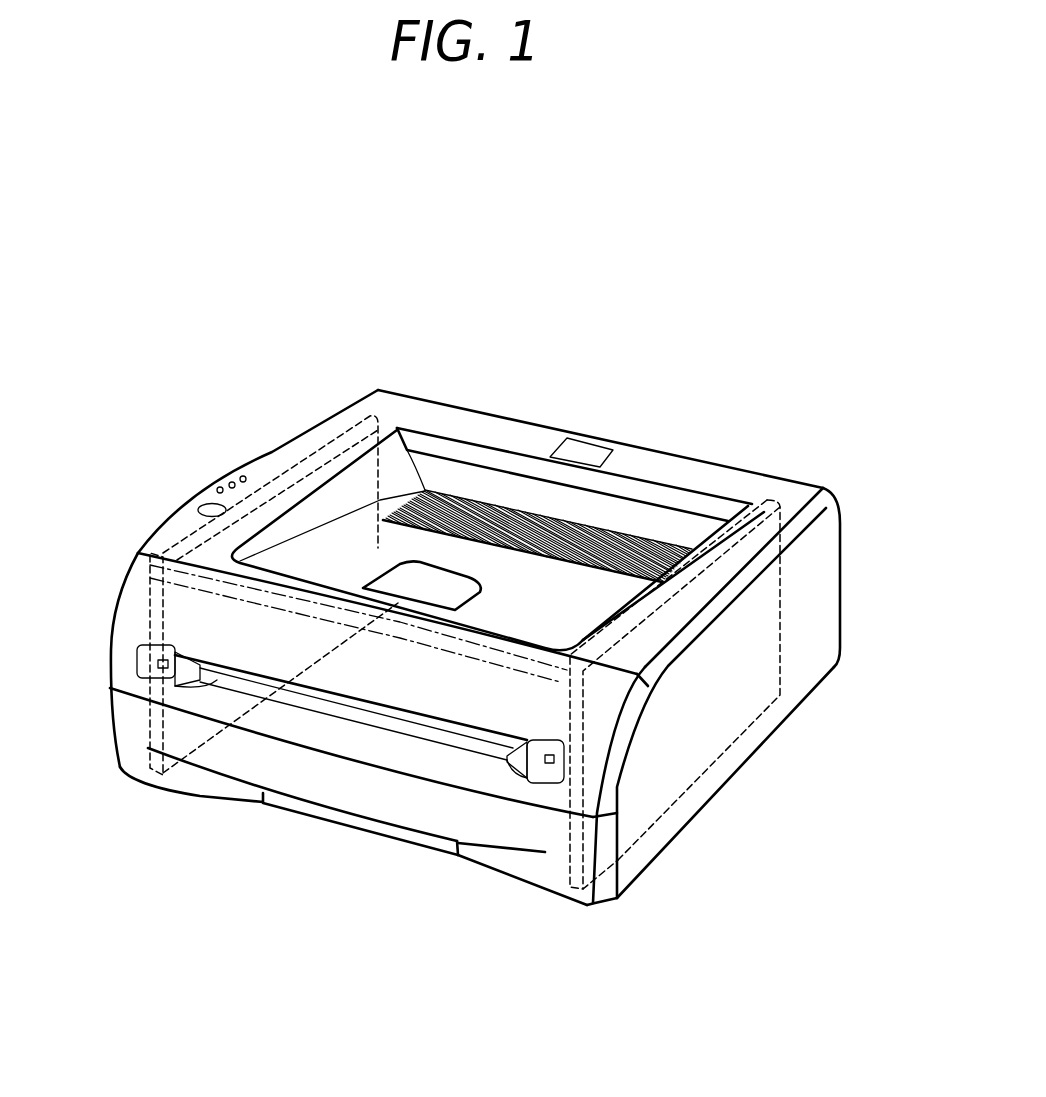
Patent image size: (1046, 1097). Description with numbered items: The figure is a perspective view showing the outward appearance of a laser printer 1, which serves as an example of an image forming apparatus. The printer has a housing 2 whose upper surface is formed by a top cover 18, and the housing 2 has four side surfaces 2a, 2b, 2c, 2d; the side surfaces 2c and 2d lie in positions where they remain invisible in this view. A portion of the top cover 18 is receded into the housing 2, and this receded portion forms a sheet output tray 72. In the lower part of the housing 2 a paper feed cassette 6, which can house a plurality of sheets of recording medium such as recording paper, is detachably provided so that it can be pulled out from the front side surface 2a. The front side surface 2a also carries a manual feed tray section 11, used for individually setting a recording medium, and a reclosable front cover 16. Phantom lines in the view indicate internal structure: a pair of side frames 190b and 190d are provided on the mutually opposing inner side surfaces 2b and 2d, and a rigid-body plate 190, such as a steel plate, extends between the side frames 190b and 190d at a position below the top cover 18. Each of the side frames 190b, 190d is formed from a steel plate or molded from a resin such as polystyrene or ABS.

The laser printer 1 is at (695, 410).
The housing 2 is at (810, 620).
The front side surface 2a is at (307, 830).
The side surface 2b is at (742, 731).
The side surface 2c is at (851, 535).
The side surface 2d is at (247, 457).
The paper feed cassette 6 is at (562, 883).
The manual feed tray section 11 is at (443, 733).
The front cover 16 is at (590, 710).
The top cover 18 is at (481, 423).
The sheet output tray 72 is at (583, 550).
The rigid-body plate 190 is at (338, 543).
The side frame 190b is at (650, 817).
The side frame 190d is at (177, 603).